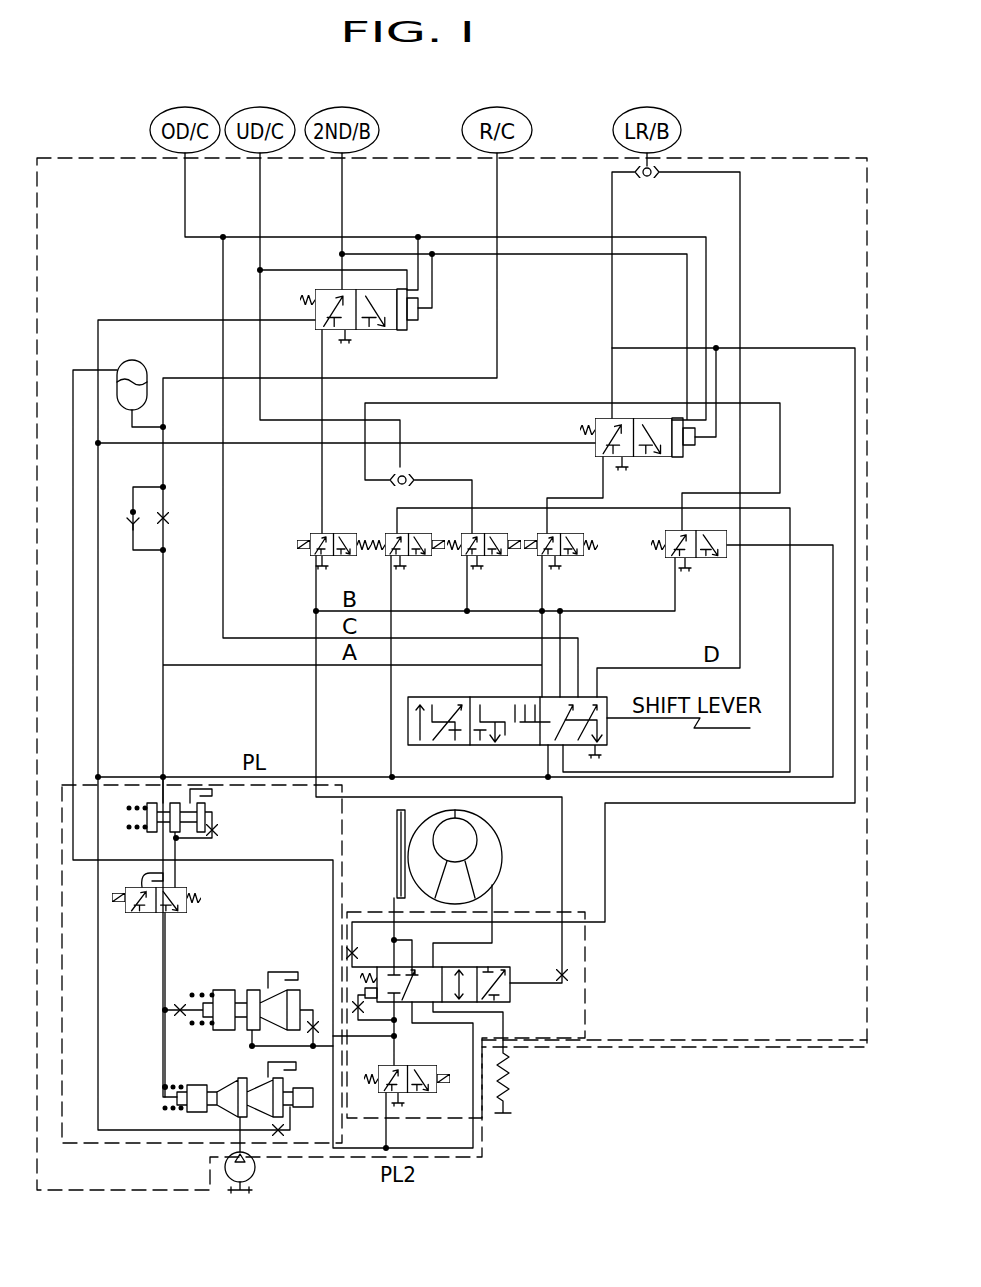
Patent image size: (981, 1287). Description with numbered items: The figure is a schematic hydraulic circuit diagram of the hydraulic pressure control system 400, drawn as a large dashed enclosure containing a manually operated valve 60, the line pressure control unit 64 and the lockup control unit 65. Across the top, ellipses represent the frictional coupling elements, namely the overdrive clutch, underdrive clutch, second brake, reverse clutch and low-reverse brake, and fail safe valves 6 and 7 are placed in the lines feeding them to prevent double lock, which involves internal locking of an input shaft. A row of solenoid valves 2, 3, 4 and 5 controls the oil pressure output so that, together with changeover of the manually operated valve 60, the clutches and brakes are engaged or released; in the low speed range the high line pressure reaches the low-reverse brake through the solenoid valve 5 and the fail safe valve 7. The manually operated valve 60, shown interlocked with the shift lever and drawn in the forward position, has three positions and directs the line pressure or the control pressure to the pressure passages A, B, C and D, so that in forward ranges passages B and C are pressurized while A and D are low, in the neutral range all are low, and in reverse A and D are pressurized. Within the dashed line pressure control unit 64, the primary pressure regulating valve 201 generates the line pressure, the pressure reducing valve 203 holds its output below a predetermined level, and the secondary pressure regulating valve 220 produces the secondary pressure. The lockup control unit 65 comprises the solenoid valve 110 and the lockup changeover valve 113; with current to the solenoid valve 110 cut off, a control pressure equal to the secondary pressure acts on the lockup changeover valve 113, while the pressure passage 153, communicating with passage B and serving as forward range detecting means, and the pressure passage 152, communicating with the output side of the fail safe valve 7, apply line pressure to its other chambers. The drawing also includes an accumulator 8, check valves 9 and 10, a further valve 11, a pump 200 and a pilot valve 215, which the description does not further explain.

The solenoid valve 2 is at (310, 530).
The solenoid valve 3 is at (418, 558).
The solenoid valve 4 is at (495, 558).
The solenoid valve 5 is at (578, 558).
The fail safe valve 6 is at (412, 328).
The fail safe valve 7 is at (690, 452).
The accumulator 8 is at (147, 370).
The check valve 9 is at (418, 478).
The check valve 10 is at (655, 178).
The shift valve 11 is at (705, 560).
The manually operated valve 60 is at (612, 745).
The line pressure control unit 64 is at (105, 1145).
The lockup control unit 65 is at (585, 1013).
The solenoid valve 110 is at (414, 1064).
The lockup changeover valve 113 is at (512, 1000).
The pressure passage 152 is at (605, 858).
The pressure passage 153 is at (562, 948).
The oil pump 200 is at (503, 852).
The primary pressure regulating valve 201 is at (292, 1110).
The pressure reducing valve 203 is at (213, 805).
The pilot valve 215 is at (200, 893).
The secondary pressure regulating valve 220 is at (300, 990).
The hydraulic pressure control system 400 is at (720, 1047).